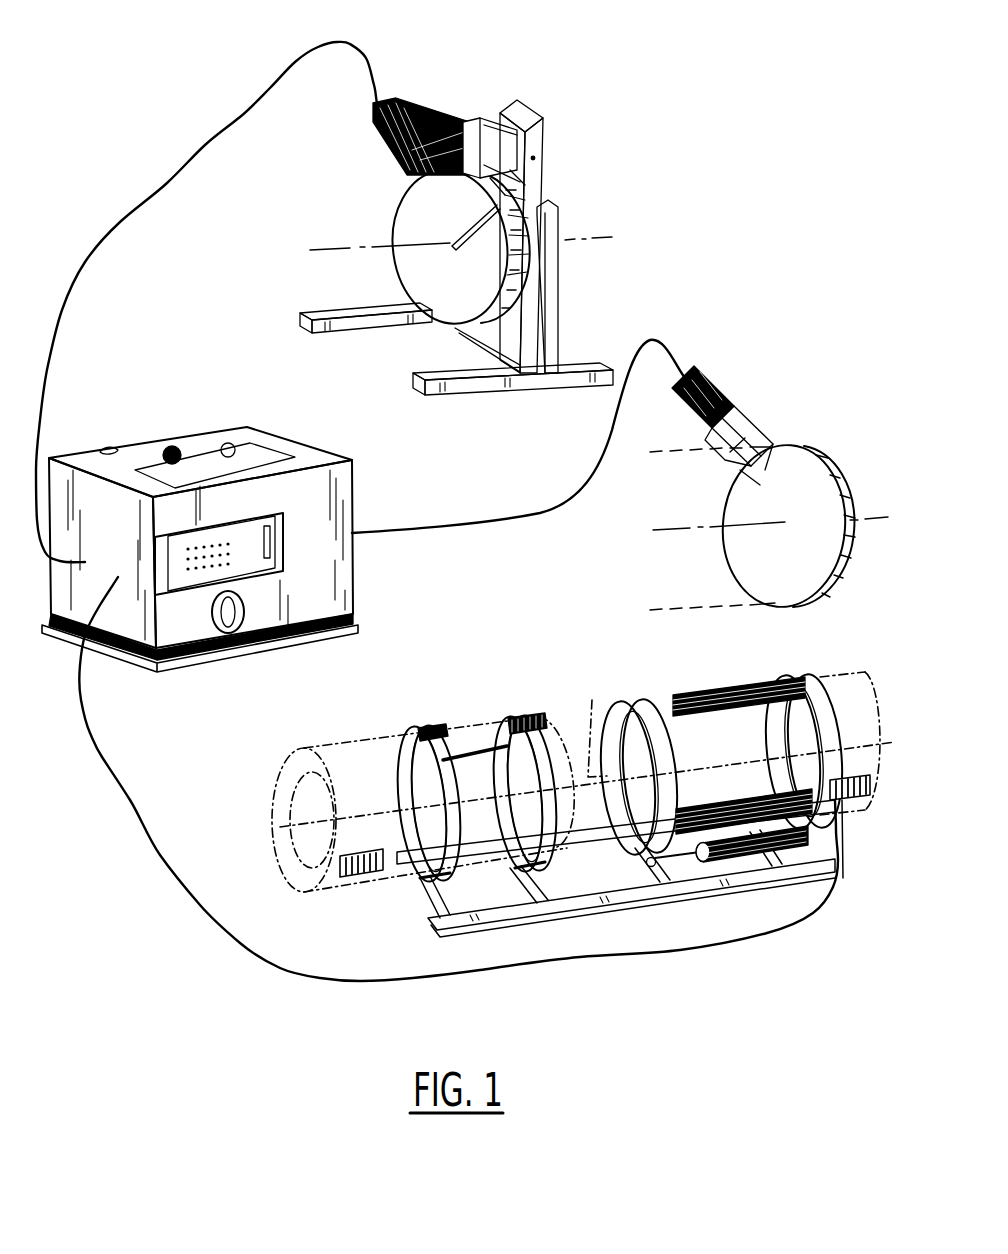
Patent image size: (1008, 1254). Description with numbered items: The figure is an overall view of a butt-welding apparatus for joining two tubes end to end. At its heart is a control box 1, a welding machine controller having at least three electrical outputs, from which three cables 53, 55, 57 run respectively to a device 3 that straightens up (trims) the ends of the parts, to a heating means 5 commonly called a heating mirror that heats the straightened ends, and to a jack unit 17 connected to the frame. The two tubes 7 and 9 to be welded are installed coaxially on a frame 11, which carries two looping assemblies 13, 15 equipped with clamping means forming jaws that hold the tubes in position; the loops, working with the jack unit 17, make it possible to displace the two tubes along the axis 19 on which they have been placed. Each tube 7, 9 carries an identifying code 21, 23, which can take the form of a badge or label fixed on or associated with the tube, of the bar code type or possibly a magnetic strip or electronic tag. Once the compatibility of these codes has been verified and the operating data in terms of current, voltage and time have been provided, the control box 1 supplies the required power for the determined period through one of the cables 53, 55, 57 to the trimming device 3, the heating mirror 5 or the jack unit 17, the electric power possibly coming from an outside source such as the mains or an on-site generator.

The control box 1 is at (216, 425).
The device for straightening up the ends of the parts 3 is at (418, 232).
The heating means 5 is at (805, 478).
The tube 7 is at (357, 767).
The tube 9 is at (847, 673).
The frame 11 is at (528, 710).
The looping assembly 13 is at (443, 743).
The looping assembly 15 is at (807, 673).
The jack unit 17 is at (753, 798).
The axis 19 is at (592, 700).
The identifying code 21 is at (370, 873).
The identifying code 23 is at (873, 800).
The cable 53 is at (70, 280).
The cable 55 is at (473, 523).
The cable 57 is at (265, 958).